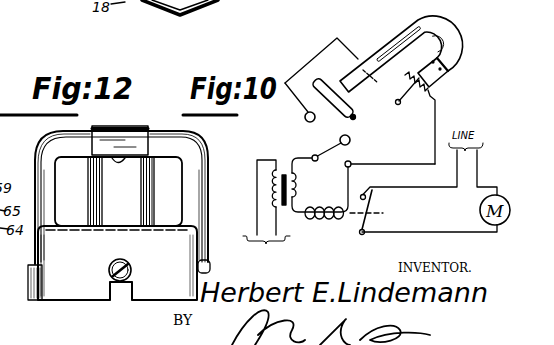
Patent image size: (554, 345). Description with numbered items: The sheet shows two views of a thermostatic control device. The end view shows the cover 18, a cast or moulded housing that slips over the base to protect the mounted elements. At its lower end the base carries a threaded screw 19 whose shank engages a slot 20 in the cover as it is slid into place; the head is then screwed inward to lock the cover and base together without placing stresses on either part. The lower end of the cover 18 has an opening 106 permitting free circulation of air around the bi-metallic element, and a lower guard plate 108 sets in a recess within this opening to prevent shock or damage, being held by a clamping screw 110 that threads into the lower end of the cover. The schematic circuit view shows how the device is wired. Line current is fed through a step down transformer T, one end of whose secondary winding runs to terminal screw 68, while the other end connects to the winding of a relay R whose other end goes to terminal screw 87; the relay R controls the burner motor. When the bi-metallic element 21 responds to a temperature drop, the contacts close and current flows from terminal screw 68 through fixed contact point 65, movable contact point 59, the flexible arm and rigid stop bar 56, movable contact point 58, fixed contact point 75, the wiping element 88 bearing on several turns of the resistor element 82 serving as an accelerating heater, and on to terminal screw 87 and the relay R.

In FIG. 12, the cover 18 is at (50, 154).
In FIG. 12, the opening 106 is at (168, 170).
In FIG. 12, the lower guard plate 108 is at (142, 214).
In FIG. 12, the clamping screw 110 is at (121, 165).
In FIG. 12, the threaded screw 19 is at (108, 265).
In FIG. 12, the slot 20 is at (122, 293).
In FIG. 10, the bi-metallic element 21 is at (404, 28).
In FIG. 10, the resistor element 82 is at (435, 87).
In FIG. 10, the wiping element 88 is at (406, 104).
In FIG. 10, the movable contact point 58 is at (305, 77).
In FIG. 10, the rigid stop bar 56 is at (330, 81).
In FIG. 10, the movable contact point 59 is at (358, 118).
In FIG. 10, the fixed contact point 75 is at (297, 130).
In FIG. 10, the fixed contact point 65 is at (351, 142).
In FIG. 10, the terminal screw 68 is at (318, 160).
In FIG. 10, the terminal screw 87 is at (352, 166).
In FIG. 10, the step down transformer T is at (267, 185).
In FIG. 10, the relay R is at (333, 208).